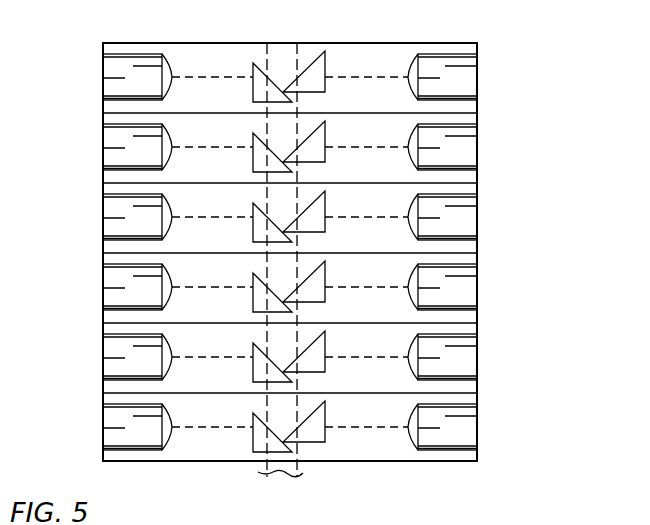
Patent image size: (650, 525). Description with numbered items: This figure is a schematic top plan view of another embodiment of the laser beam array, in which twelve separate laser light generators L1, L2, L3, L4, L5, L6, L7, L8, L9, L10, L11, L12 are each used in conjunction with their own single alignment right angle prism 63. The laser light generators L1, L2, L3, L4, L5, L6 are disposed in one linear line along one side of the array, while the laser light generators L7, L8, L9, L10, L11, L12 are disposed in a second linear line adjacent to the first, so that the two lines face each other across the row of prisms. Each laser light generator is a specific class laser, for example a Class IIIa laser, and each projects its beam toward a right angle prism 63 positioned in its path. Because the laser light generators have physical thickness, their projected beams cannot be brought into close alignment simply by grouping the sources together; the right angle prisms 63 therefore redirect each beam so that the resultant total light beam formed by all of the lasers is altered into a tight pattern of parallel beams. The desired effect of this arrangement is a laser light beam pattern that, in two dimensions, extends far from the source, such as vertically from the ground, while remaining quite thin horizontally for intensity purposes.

The right angle prism 63 is at (275, 85).
The laser light generator L1 is at (106, 70).
The laser light generator L2 is at (106, 140).
The laser light generator L3 is at (106, 210).
The laser light generator L4 is at (106, 280).
The laser light generator L5 is at (106, 350).
The laser light generator L6 is at (106, 420).
The laser light generator L7 is at (470, 70).
The laser light generator L8 is at (470, 140).
The laser light generator L9 is at (470, 210).
The laser light generator L10 is at (470, 280).
The laser light generator L11 is at (470, 350).
The laser light generator L12 is at (470, 420).